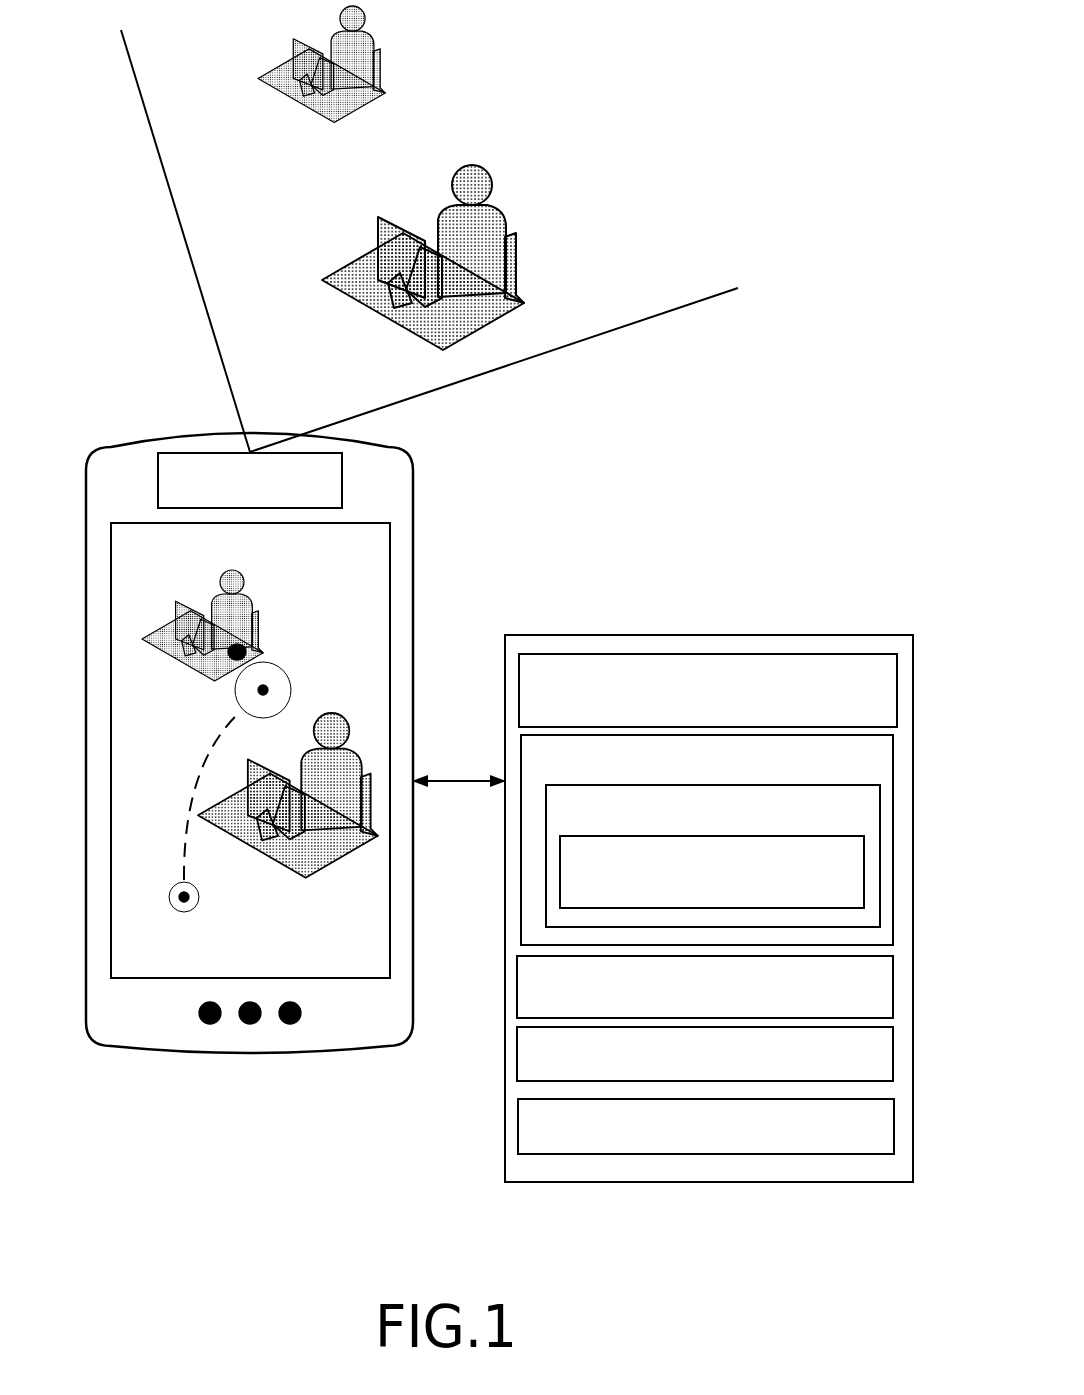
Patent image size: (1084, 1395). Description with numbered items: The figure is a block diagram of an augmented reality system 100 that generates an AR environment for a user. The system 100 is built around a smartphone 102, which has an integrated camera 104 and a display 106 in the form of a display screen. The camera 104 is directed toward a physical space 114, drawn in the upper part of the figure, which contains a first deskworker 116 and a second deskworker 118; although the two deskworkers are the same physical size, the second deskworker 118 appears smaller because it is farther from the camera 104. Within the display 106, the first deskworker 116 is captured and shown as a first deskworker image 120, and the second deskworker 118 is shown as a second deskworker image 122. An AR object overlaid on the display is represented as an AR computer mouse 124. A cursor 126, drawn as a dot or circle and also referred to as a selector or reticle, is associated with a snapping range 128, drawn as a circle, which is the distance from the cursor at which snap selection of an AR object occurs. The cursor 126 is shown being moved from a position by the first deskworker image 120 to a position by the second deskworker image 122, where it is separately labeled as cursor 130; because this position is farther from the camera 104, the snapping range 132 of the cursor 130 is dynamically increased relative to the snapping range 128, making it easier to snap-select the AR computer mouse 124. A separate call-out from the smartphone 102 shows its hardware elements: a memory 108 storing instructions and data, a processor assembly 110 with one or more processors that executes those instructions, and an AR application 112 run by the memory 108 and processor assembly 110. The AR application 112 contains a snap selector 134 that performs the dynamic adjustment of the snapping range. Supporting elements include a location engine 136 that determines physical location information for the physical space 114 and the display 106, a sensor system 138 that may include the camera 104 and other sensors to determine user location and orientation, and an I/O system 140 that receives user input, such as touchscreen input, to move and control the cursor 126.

The system 100 is at (879, 116).
The smartphone 102 is at (407, 452).
The camera 104 is at (250, 480).
The display 106 is at (377, 542).
The memory 108 is at (680, 771).
The processor assembly 110 is at (612, 704).
The AR application 112 is at (650, 821).
The physical space 114 is at (598, 52).
The first deskworker 116 is at (523, 232).
The second deskworker 118 is at (383, 35).
The first deskworker image 120 is at (350, 740).
The second deskworker image 122 is at (257, 580).
The AR computer mouse 124 is at (253, 647).
The cursor 126 is at (190, 892).
The snapping range 128 is at (167, 893).
The cursor 130 is at (273, 685).
The snapping range 132 is at (233, 688).
The snap selector 134 is at (653, 886).
The location engine 136 is at (635, 999).
The sensor system 138 is at (640, 1067).
The I/O system 140 is at (663, 1139).